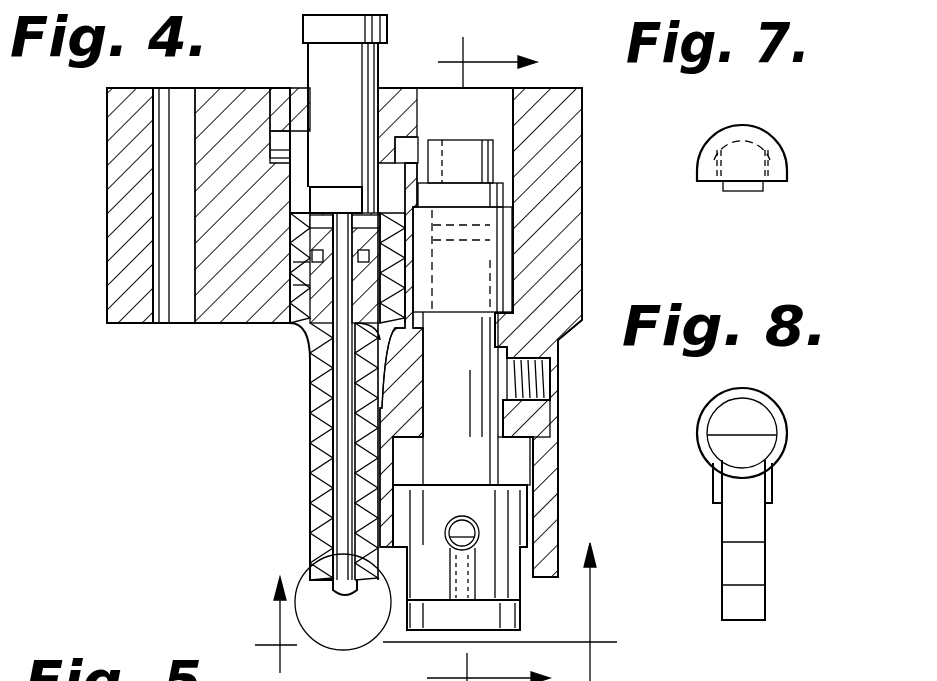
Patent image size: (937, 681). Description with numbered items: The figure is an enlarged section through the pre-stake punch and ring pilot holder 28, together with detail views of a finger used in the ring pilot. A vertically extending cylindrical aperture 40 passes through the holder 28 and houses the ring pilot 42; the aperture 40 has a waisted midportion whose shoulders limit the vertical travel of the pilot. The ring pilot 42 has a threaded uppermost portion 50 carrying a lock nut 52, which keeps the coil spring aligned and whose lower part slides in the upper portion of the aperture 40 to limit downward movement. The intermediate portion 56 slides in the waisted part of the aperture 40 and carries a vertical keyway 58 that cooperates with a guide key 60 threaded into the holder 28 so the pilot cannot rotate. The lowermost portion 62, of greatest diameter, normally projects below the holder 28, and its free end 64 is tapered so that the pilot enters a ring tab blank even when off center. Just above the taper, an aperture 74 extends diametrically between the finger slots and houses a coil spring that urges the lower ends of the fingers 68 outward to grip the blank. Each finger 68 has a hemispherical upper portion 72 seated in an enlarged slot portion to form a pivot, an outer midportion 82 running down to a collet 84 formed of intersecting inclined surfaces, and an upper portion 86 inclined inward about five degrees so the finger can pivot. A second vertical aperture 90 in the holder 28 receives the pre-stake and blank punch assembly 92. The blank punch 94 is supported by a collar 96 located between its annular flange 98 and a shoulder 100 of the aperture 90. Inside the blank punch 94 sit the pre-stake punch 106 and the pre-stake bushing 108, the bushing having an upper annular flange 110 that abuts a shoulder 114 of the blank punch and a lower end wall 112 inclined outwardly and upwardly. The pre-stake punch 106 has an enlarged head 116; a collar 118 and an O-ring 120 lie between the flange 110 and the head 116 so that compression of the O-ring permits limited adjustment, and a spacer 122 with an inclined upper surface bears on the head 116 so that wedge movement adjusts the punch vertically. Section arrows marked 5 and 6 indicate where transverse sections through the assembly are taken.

In FIG. 4, the pre-stake punch and ring pilot holder 28 is at (212, 347).
In FIG. 4, the cylindrical aperture 40 is at (508, 88).
In FIG. 4, the ring pilot 42 is at (473, 476).
In FIG. 4, the uppermost portion 50 is at (512, 270).
In FIG. 4, the lock nut 52 is at (507, 222).
In FIG. 4, the intermediate portion 56 is at (462, 406).
In FIG. 4, the keyway 58 is at (503, 422).
In FIG. 4, the guide key 60 is at (552, 382).
In FIG. 4, the lowermost portion 62 is at (527, 512).
In FIG. 4, the lowermost free end 64 is at (490, 633).
In FIG. 7, the finger 68 is at (766, 153).
In FIG. 8, the finger 68 is at (766, 488).
In FIG. 4, the hemispherical portion 72 is at (462, 558).
In FIG. 7, the hemispherical portion 72 is at (788, 153).
In FIG. 8, the hemispherical portion 72 is at (788, 437).
In FIG. 4, the aperture 74 is at (448, 622).
In FIG. 8, the midportion 82 is at (757, 521).
In FIG. 8, the collet 84 is at (753, 583).
In FIG. 7, the inclined portion 86 is at (747, 191).
In FIG. 8, the inclined portion 86 is at (756, 430).
In FIG. 4, the second vertical aperture 90 is at (290, 222).
In FIG. 4, the pre-stake and blank punch assembly 92 is at (300, 412).
In FIG. 4, the blank punch 94 is at (303, 332).
In FIG. 4, the collar 96 is at (278, 131).
In FIG. 4, the annular flange 98 is at (418, 140).
In FIG. 4, the shoulder 100 is at (272, 152).
In FIG. 4, the pre-stake punch 106 is at (335, 468).
In FIG. 4, the pre-stake bushing 108 is at (330, 505).
In FIG. 4, the upper annular flange 110 is at (300, 262).
In FIG. 4, the end wall 112 is at (345, 590).
In FIG. 4, the shoulder 114 is at (300, 282).
In FIG. 4, the head portion 116 is at (336, 200).
In FIG. 4, the collar 118 is at (300, 243).
In FIG. 4, the O-ring 120 is at (280, 200).
In FIG. 4, the spacer 122 is at (354, 84).
In FIG. 4, the section line 5- 5 is at (428, 612).
In FIG. 4, the section line 6- 6 is at (488, 357).